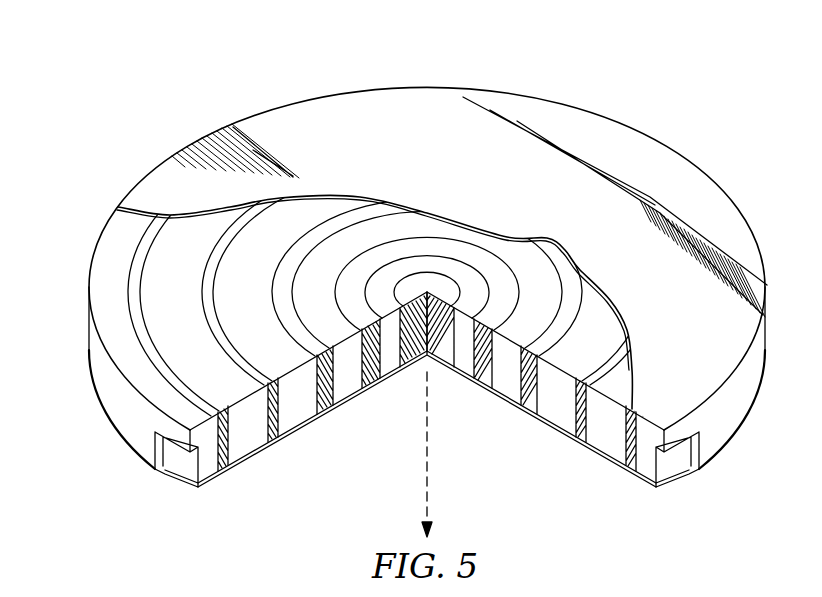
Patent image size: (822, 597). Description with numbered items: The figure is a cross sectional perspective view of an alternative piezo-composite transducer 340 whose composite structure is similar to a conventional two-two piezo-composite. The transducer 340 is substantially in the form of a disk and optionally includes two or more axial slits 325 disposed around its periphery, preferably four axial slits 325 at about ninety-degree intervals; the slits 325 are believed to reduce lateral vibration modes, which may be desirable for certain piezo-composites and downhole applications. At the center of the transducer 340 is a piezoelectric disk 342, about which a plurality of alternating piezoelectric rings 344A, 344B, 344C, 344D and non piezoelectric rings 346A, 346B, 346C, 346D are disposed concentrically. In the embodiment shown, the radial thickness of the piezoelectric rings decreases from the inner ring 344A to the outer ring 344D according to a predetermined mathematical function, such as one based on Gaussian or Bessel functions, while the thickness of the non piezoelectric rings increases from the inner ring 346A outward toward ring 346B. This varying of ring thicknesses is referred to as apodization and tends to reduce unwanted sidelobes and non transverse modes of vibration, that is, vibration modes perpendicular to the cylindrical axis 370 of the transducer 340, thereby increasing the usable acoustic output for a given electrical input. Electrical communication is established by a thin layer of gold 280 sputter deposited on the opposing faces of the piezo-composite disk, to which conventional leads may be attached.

The piezo-composite transducer 340 is at (596, 72).
The thin layer of gold 280 is at (157, 187).
The piezoelectric disk 342 is at (430, 285).
The piezoelectric ring 344A is at (375, 365).
The piezoelectric ring 344B is at (332, 398).
The piezoelectric ring 344C is at (277, 428).
The piezoelectric ring 344D is at (220, 455).
The non piezoelectric ring 346A is at (452, 360).
The non piezoelectric ring 346B is at (510, 393).
The non piezoelectric ring 346C is at (555, 418).
The non piezoelectric ring 346D is at (612, 448).
The axial slit 325 is at (187, 468).
The cylindrical axis 370 is at (427, 490).